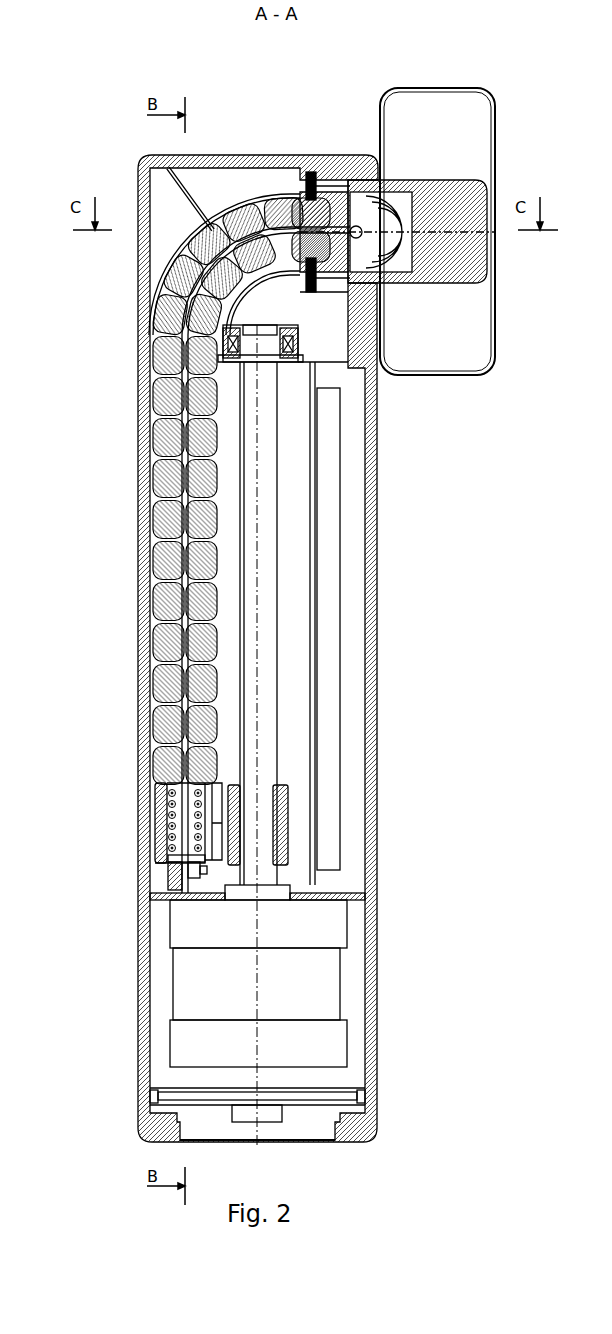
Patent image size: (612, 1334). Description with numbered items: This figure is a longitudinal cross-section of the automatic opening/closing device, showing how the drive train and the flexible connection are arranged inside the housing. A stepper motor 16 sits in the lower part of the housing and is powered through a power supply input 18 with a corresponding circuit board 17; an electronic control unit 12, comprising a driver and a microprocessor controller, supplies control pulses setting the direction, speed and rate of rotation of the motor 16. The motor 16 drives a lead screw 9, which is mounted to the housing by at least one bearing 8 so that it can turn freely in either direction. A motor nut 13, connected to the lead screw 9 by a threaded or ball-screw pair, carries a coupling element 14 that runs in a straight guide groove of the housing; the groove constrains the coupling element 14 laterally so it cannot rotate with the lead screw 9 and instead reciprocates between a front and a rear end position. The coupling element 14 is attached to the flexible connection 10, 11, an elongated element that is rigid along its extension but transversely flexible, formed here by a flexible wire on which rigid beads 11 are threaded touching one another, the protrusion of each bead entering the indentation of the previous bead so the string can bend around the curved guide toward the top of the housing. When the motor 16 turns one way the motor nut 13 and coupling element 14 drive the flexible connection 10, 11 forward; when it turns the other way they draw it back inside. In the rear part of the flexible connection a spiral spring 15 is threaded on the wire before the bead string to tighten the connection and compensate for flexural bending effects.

The bearing 8 is at (226, 345).
The lead screw 9 is at (237, 415).
The flexible connection 10 is at (185, 413).
The beads 11 is at (155, 450).
The electronic control unit 12 is at (308, 518).
The motor nut 13 is at (230, 784).
The coupling element 14 is at (157, 795).
The spiral spring 15 is at (169, 817).
The stepper motor 16 is at (170, 938).
The circuit board 17 is at (197, 1093).
The power supply input 18 is at (257, 1118).